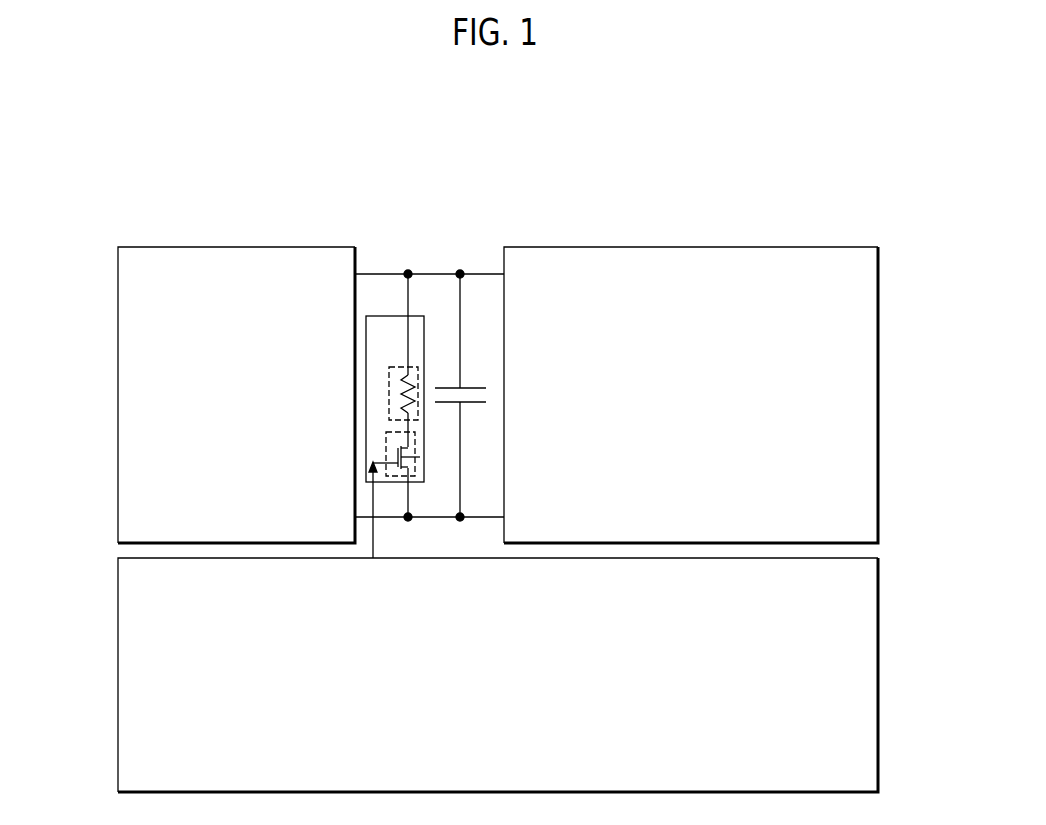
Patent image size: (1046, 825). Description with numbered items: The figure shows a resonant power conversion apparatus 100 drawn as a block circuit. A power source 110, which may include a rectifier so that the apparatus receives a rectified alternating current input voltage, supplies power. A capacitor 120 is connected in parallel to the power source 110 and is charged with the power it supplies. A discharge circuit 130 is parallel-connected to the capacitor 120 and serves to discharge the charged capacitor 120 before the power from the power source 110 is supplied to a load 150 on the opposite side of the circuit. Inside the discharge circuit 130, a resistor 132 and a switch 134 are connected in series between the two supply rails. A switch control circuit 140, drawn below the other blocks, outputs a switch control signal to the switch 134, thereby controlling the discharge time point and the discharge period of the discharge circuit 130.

The resonant power conversion apparatus 100 is at (871, 202).
The power source 110 is at (283, 247).
The capacitor 120 is at (477, 388).
The discharge circuit 130 is at (382, 316).
The resistor 132 is at (389, 377).
The switch 134 is at (386, 447).
The switch control circuit 140 is at (878, 673).
The load 150 is at (745, 247).